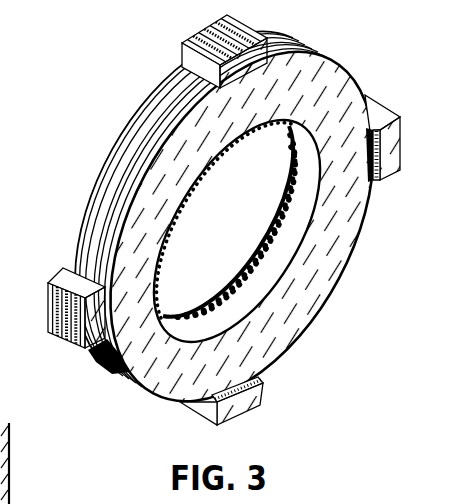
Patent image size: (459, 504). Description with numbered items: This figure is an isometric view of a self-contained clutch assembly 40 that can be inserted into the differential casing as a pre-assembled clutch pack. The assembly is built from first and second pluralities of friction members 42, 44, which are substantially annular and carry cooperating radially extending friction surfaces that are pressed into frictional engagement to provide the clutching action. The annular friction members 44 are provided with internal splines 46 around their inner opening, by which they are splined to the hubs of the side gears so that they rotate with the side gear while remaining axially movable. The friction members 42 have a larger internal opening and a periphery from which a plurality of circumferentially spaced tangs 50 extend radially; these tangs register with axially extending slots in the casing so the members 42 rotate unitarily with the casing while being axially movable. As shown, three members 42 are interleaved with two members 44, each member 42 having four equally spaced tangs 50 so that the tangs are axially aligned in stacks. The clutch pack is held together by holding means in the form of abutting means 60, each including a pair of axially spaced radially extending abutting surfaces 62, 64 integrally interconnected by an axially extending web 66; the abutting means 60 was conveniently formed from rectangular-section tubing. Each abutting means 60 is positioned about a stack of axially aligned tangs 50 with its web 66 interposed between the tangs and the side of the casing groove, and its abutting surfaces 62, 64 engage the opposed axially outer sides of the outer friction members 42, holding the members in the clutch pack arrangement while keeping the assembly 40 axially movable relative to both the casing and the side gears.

The clutch assembly 40 is at (362, 257).
The friction members 42 is at (165, 125).
The friction members 44 is at (122, 182).
The internal splines 46 is at (228, 293).
The tangs 50 is at (210, 28).
The abutting means 60 is at (268, 418).
The abutting surface 62 is at (96, 357).
The abutting surface 64 is at (56, 288).
The web 66 is at (77, 279).